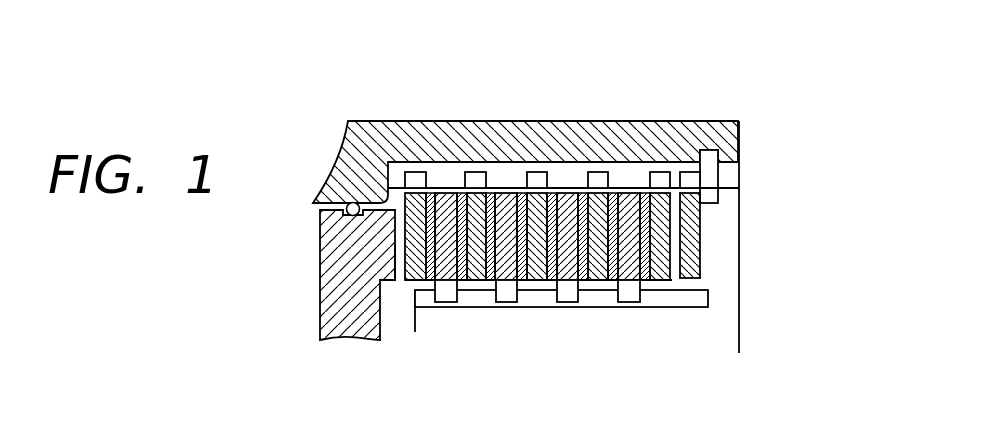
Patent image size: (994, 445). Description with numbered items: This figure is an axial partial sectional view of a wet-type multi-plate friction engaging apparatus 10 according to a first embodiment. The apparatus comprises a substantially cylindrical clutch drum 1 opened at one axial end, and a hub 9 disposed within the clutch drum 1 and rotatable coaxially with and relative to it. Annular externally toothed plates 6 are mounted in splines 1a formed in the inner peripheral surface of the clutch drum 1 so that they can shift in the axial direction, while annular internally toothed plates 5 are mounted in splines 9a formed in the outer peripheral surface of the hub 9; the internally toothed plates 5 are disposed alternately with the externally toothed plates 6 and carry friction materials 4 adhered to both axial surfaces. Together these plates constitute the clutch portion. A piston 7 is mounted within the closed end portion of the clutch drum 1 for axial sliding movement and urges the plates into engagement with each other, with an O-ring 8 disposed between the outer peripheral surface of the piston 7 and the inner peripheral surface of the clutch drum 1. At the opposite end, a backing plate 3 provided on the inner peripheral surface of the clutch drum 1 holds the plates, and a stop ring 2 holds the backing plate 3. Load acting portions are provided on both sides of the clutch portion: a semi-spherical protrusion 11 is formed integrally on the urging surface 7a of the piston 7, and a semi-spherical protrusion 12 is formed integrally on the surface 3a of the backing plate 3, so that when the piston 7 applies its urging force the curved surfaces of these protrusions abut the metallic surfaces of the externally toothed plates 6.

The clutch drum 1 is at (520, 132).
The splines 1a is at (437, 167).
The stop ring 2 is at (713, 172).
The backing plate 3 is at (697, 255).
The surface of backing plate 3a is at (700, 207).
The friction materials 4 is at (615, 268).
The internally toothed plates 5 is at (630, 298).
The externally toothed plates 6 is at (595, 268).
The piston 7 is at (320, 296).
The urging surface 7a is at (398, 245).
The O-ring 8 is at (346, 204).
The hub 9 is at (708, 327).
The splines 9a is at (705, 293).
The wet-type multi-plate friction engaging apparatus 10 is at (767, 92).
The protrusion 11 is at (418, 284).
The protrusion 12 is at (655, 196).